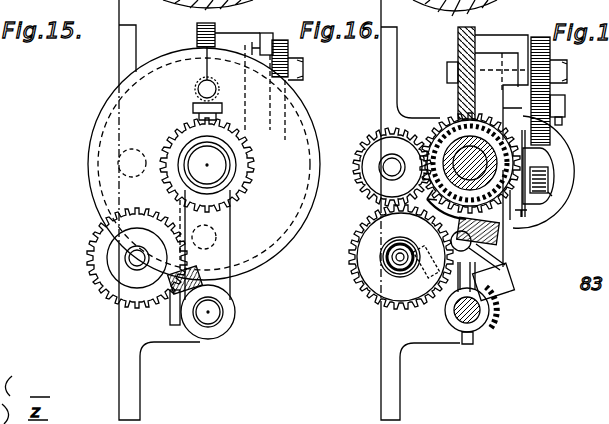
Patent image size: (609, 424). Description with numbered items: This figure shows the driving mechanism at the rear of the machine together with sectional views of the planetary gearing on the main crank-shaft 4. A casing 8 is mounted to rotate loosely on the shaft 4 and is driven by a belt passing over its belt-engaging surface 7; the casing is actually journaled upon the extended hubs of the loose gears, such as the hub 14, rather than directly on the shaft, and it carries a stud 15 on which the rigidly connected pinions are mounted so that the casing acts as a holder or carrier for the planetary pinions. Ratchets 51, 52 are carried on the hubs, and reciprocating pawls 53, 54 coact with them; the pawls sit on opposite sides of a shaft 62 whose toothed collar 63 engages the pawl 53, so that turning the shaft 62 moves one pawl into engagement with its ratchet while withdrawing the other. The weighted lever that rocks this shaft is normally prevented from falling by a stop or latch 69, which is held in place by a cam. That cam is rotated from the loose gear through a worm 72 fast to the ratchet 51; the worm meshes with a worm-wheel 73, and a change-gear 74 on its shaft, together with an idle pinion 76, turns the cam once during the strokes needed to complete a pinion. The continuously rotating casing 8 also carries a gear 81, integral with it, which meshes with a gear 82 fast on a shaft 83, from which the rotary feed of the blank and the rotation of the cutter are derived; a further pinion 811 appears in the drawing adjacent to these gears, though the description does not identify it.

In FIG. 15, the main crank-shaft 4 is at (209, 167).
In FIG. 16, the main crank-shaft 4 is at (520, 212).
In FIG. 15, the belt-engaging surface 7 is at (302, 226).
In FIG. 15, the casing 8 is at (266, 245).
In FIG. 16, the casing 8 is at (548, 192).
In FIG. 16, the hub 14 is at (523, 200).
In FIG. 15, the stud 15 is at (199, 88).
In FIG. 16, the ratchet 51 is at (441, 130).
In FIG. 15, the ratchet 52 is at (233, 152).
In FIG. 16, the pawl 53 is at (503, 248).
In FIG. 15, the pawl 54 is at (172, 318).
In FIG. 15, the shaft 62 is at (212, 316).
In FIG. 16, the shaft 62 is at (474, 322).
In FIG. 16, the collar 63 is at (482, 313).
In FIG. 15, the stop or latch 69 is at (270, 56).
In FIG. 16, the worm 72 is at (458, 115).
In FIG. 15, the worm-wheel 73 is at (197, 33).
In FIG. 16, the worm-wheel 73 is at (458, 47).
In FIG. 15, the change-gear 74 is at (303, 68).
In FIG. 16, the change-gear 74 is at (565, 61).
In FIG. 16, the idle pinion 76 is at (560, 113).
In FIG. 16, the gear 81 is at (555, 182).
In FIG. 15, the gear 82 is at (112, 262).
In FIG. 16, the gear 82 is at (358, 280).
In FIG. 15, the shaft 83 is at (135, 268).
In FIG. 16, the shaft 83 is at (400, 262).
In FIG. 16, the pinion 811 is at (366, 142).